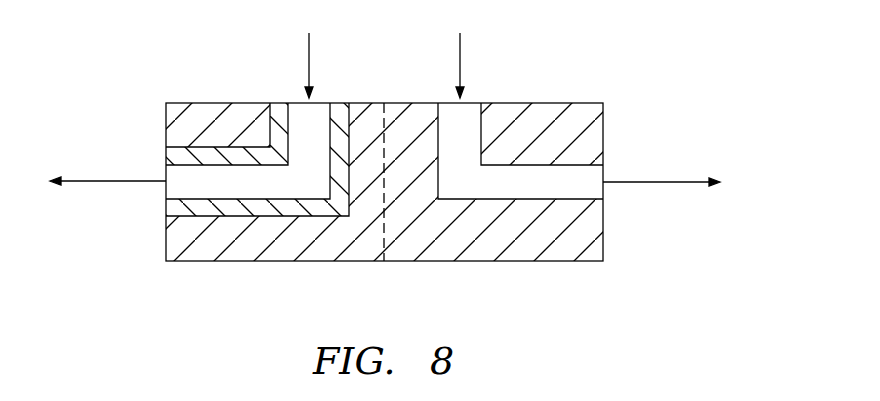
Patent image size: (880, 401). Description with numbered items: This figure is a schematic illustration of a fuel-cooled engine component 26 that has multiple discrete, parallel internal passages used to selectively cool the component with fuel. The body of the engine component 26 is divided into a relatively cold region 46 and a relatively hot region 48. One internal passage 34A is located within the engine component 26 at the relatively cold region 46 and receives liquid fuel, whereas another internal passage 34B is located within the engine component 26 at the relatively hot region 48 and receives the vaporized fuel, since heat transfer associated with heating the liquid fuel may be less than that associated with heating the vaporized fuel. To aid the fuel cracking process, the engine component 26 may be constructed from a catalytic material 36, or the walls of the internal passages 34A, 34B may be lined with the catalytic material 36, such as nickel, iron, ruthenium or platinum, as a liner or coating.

The fuel-cooled engine component 26 is at (639, 66).
The internal passage 34A is at (542, 190).
The internal passage 34B is at (230, 188).
The catalytic material 36 is at (173, 157).
The relatively cold region 46 is at (482, 258).
The relatively hot region 48 is at (308, 258).